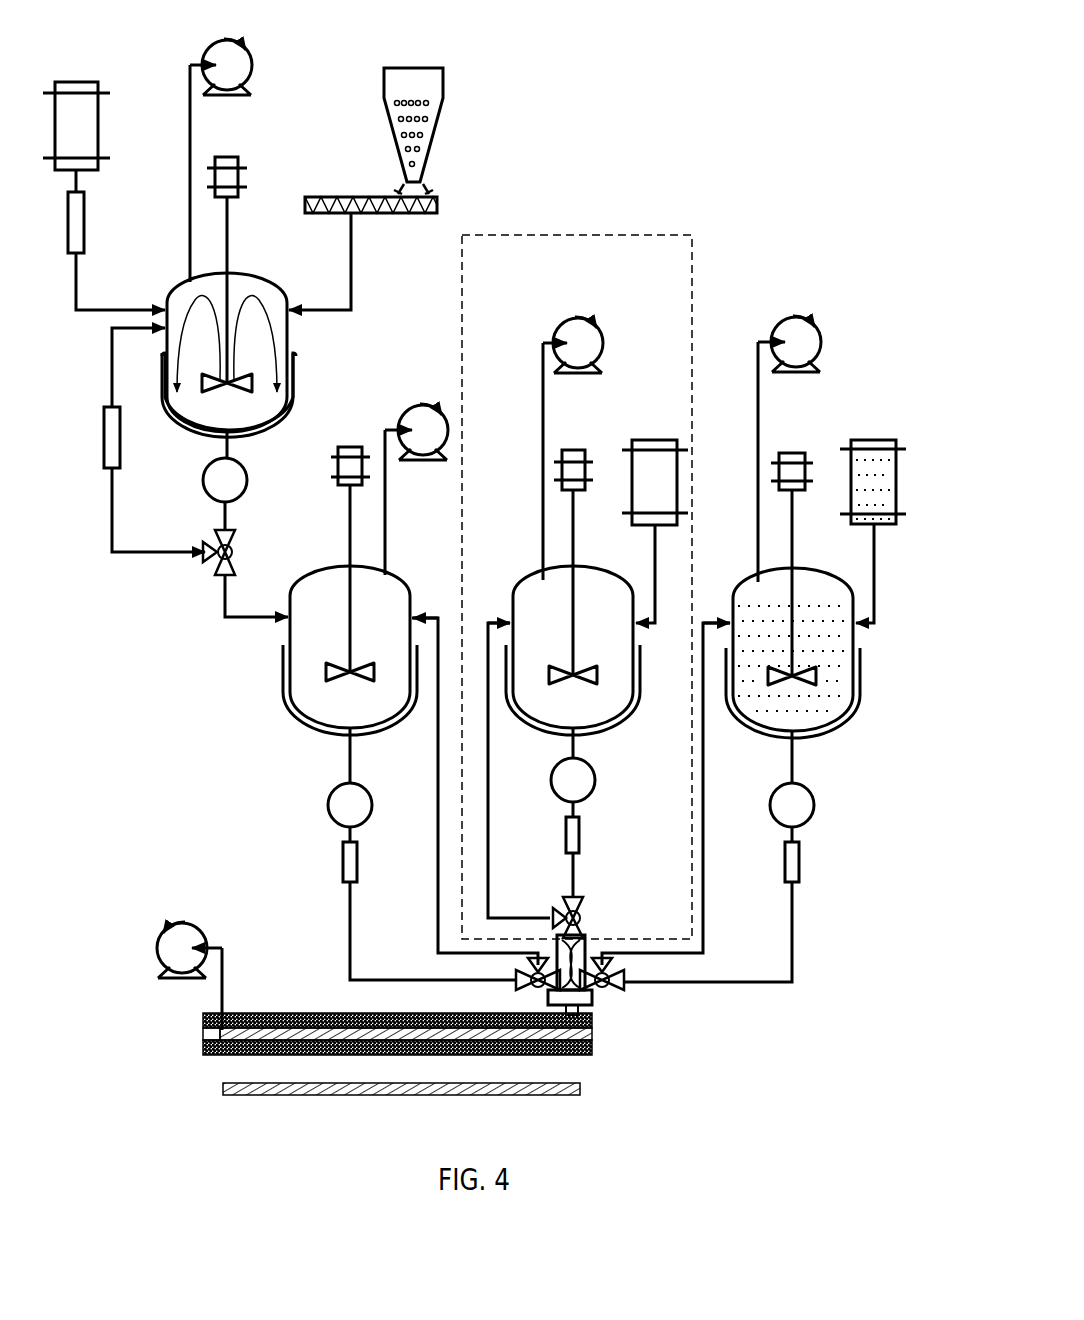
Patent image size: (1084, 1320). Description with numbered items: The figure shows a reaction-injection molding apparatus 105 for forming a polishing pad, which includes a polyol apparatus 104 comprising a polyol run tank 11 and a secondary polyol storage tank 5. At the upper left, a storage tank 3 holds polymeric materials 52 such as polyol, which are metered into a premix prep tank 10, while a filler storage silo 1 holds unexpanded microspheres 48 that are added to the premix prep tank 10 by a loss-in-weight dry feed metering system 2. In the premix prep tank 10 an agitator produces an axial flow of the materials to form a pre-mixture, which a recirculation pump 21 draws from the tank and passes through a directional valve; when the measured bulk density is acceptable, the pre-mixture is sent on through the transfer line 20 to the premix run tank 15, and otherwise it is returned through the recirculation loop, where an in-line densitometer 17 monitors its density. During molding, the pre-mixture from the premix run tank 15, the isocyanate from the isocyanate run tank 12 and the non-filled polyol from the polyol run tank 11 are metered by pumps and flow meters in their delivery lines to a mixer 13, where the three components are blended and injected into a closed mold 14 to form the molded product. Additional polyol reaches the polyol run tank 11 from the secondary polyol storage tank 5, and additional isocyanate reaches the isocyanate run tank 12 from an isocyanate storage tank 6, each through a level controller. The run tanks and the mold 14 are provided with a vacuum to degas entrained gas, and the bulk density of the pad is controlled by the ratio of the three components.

The filler storage silo 1 is at (383, 96).
The dry feed metering system 2 is at (332, 200).
The storage tank 3 is at (100, 82).
The secondary polyol storage tank 5 is at (628, 442).
The isocyanate storage tank 6 is at (848, 443).
The premix prep tank 10 is at (202, 438).
The polyol run tank 11 is at (590, 738).
The isocyanate run tank 12 is at (815, 742).
The mixer 13 is at (585, 997).
The closed mold 14 is at (215, 1056).
The premix run tank 15 is at (318, 733).
The in-line densitometer 17 is at (110, 450).
The transfer line 20 is at (218, 608).
The recirculation pump 21 is at (220, 486).
The unexpanded microspheres 48 is at (420, 137).
The polymeric materials 52 is at (77, 134).
The polyol apparatus 104 is at (578, 258).
The reaction-injection molding apparatus 105 is at (757, 128).